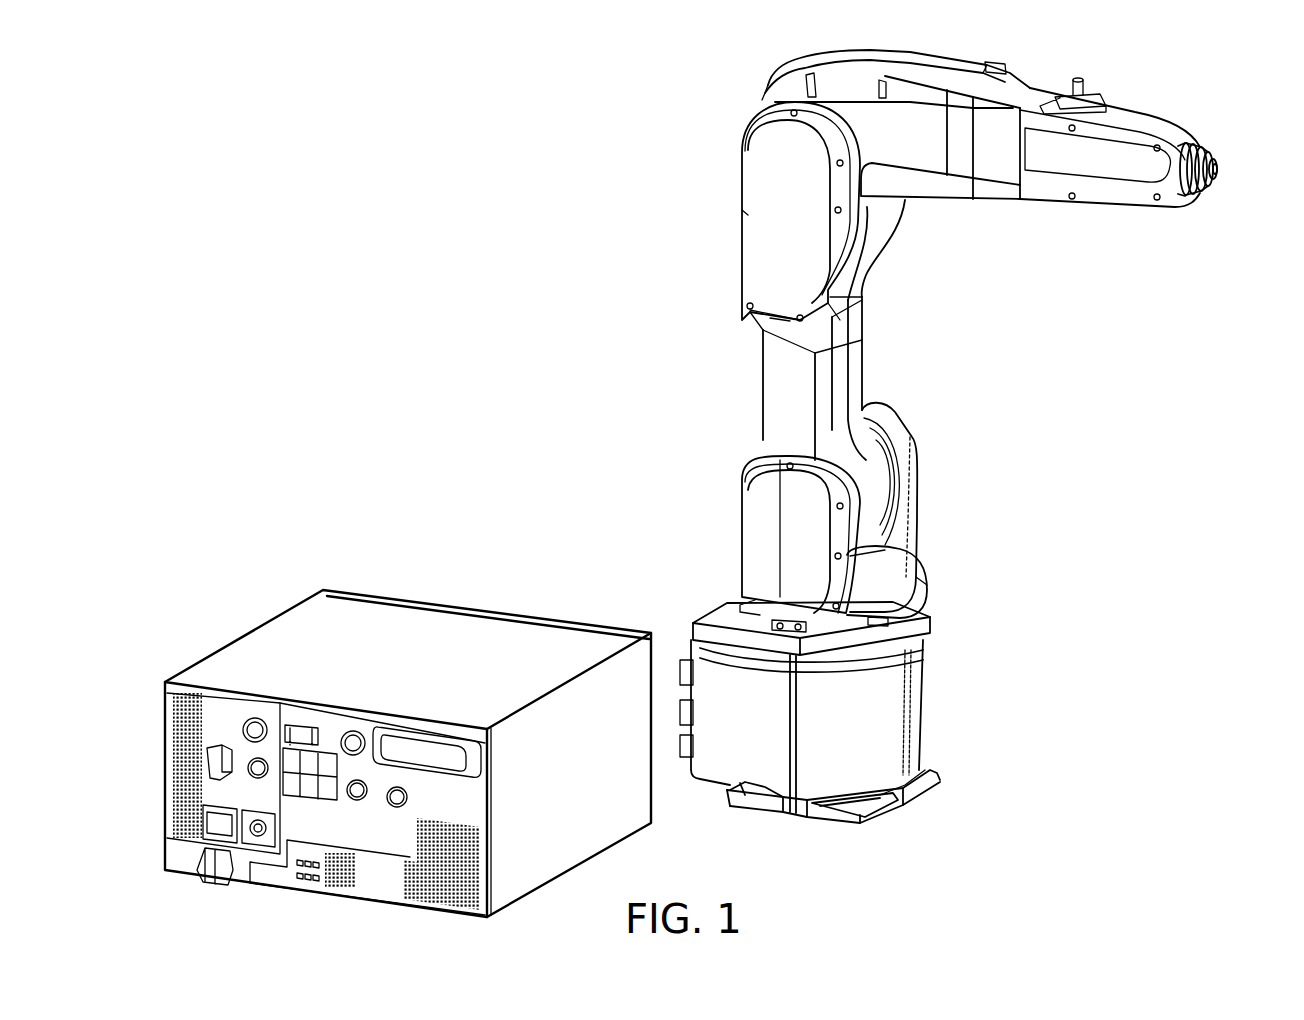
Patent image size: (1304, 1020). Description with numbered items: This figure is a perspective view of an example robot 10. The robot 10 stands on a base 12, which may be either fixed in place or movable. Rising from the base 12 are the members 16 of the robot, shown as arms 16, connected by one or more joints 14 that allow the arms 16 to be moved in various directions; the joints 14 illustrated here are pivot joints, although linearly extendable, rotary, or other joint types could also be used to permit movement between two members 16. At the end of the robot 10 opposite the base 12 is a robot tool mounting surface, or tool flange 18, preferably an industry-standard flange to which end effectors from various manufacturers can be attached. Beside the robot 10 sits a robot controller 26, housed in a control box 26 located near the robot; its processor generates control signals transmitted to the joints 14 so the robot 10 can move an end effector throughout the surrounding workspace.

The robot 10 is at (693, 154).
The base 12 is at (930, 687).
The joints 14 is at (762, 493).
The members 16 is at (862, 362).
The tool flange 18 is at (1218, 170).
The robot controller 26 is at (375, 593).